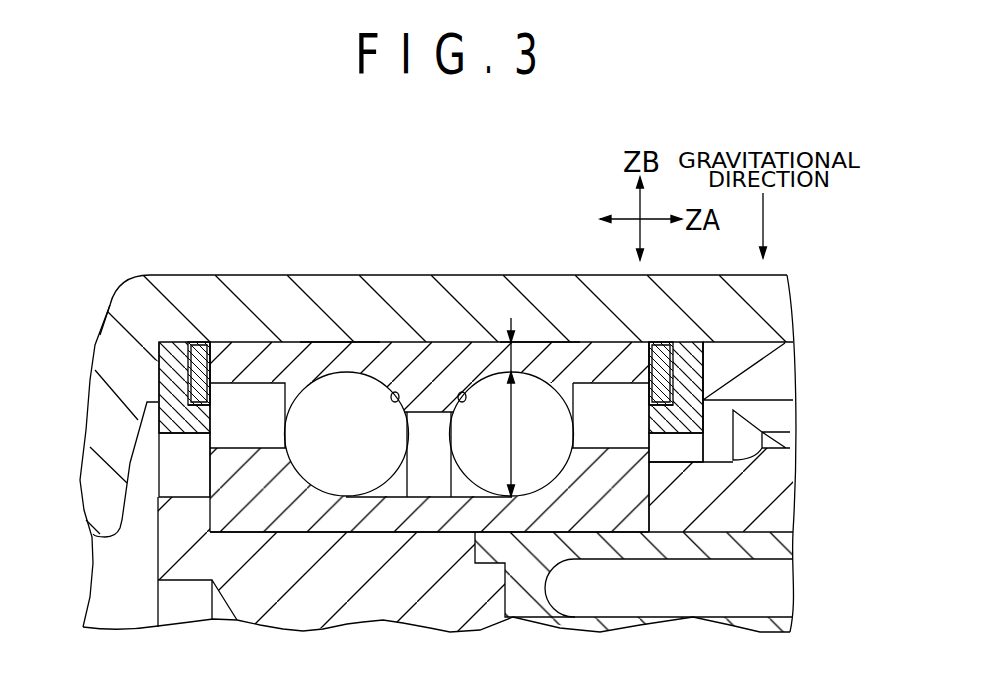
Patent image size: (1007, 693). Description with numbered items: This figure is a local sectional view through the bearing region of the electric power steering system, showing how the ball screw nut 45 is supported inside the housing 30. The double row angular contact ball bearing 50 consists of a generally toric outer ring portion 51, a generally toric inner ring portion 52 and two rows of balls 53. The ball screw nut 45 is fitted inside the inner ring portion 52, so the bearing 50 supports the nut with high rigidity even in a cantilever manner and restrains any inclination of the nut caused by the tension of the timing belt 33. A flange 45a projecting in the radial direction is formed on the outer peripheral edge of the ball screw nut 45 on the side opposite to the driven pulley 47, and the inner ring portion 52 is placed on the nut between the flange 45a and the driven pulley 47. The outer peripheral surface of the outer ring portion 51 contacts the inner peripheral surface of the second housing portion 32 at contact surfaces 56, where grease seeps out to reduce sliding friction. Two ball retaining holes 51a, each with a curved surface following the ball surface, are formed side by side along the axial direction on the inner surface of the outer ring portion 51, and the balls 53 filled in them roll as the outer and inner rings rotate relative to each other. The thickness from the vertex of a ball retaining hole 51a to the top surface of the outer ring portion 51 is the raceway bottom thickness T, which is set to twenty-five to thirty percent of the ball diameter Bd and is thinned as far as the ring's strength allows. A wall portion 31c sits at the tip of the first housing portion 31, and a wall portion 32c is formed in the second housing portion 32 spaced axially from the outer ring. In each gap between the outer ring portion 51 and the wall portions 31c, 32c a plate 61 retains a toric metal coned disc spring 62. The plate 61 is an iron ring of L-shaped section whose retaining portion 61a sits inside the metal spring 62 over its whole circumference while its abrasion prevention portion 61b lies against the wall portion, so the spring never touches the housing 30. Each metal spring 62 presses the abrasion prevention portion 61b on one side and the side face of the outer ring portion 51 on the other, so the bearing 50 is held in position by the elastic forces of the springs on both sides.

The housing 30 is at (462, 275).
The first housing portion 31 is at (787, 343).
The wall portion 31c is at (730, 368).
The second housing portion 32 is at (339, 275).
The wall portion 32c is at (147, 402).
The timing belt 33 is at (790, 440).
The ball screw nut 45 is at (273, 622).
The flange 45a is at (160, 512).
The driven pulley 47 is at (682, 495).
The double row angular contact ball bearing 50 is at (607, 340).
The outer ring portion 51 is at (287, 352).
The ball retaining hole 51a is at (468, 396).
The inner ring portion 52 is at (350, 522).
The balls 53 is at (470, 451).
The contact surfaces 56 is at (343, 342).
The plate 61 is at (177, 350).
The retaining portion 61a is at (183, 428).
The abrasion prevention portion 61b is at (170, 372).
The metal spring 62 is at (202, 350).
The raceway bottom thickness T is at (517, 352).
The ball diameter Bd is at (514, 426).